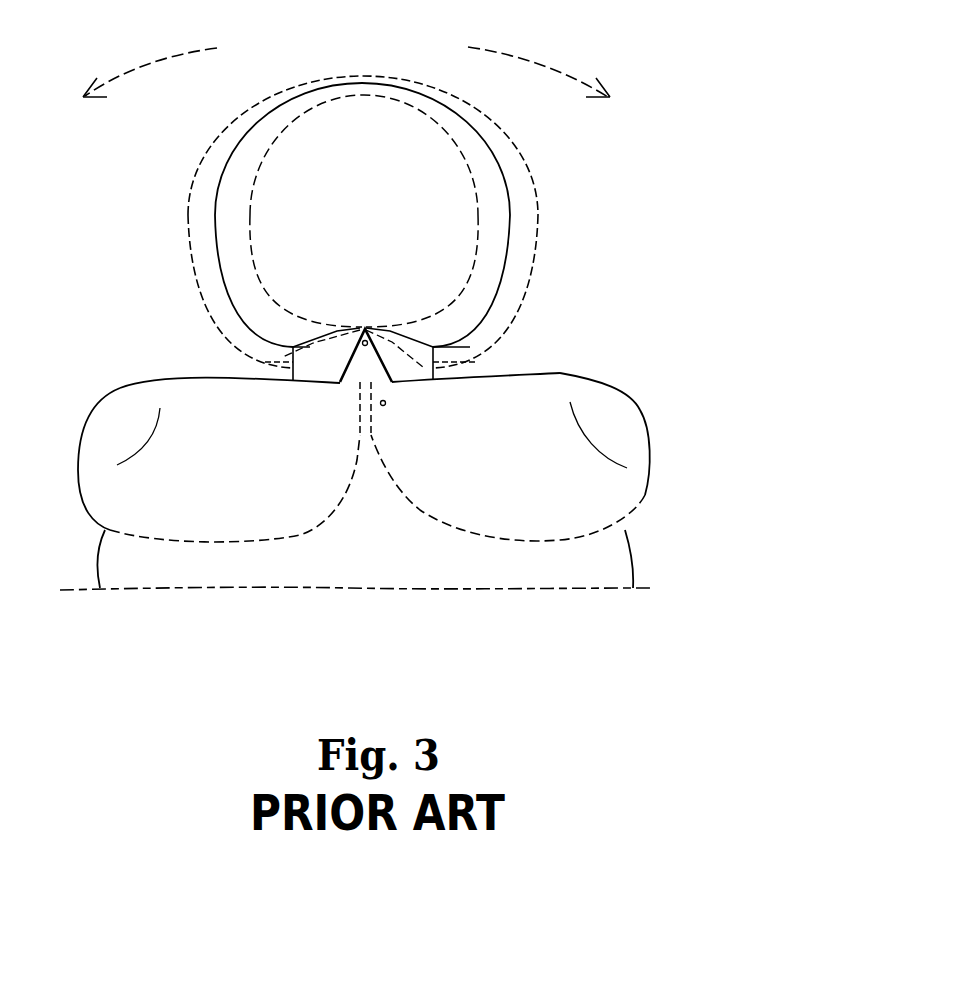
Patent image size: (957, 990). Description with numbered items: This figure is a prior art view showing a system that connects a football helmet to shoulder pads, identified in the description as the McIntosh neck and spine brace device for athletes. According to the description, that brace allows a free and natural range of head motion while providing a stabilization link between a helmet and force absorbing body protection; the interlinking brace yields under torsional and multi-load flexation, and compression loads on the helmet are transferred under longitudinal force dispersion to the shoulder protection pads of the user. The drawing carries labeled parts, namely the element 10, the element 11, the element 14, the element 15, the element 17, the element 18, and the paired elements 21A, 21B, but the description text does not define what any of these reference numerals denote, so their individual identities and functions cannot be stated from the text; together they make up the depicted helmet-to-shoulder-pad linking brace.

The device 10 is at (344, 391).
The wire loop 11 is at (497, 157).
The base top edge 14 is at (548, 377).
The loop travel path 15 is at (463, 97).
The inner loop position 17 is at (457, 240).
The wire end connector 18 is at (250, 363).
The left lobe 21A is at (260, 508).
The right lobe 21B is at (606, 503).